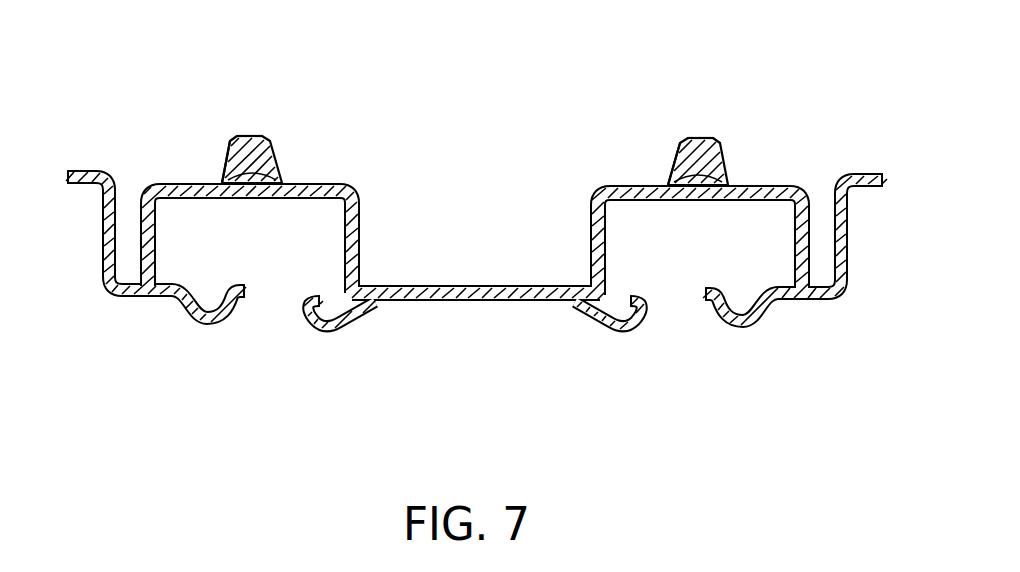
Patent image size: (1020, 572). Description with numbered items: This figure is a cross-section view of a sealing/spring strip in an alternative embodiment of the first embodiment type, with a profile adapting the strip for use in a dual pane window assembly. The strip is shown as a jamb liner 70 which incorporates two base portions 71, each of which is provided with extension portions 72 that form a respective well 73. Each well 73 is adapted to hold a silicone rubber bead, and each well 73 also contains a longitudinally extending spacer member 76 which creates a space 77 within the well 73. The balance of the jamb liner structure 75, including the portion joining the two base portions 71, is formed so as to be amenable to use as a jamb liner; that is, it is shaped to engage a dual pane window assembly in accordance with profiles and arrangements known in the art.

The jamb liner 70 is at (807, 84).
The base portion 71 is at (193, 183).
The extension portion 72 is at (278, 158).
The well 73 is at (250, 136).
The jamb liner structure 75 is at (502, 310).
The spacer member 76 is at (229, 147).
The space 77 is at (253, 185).